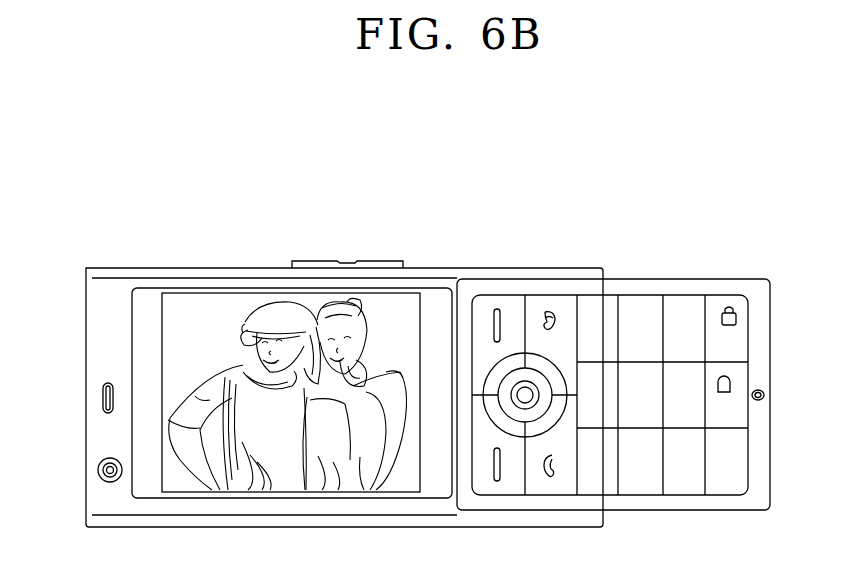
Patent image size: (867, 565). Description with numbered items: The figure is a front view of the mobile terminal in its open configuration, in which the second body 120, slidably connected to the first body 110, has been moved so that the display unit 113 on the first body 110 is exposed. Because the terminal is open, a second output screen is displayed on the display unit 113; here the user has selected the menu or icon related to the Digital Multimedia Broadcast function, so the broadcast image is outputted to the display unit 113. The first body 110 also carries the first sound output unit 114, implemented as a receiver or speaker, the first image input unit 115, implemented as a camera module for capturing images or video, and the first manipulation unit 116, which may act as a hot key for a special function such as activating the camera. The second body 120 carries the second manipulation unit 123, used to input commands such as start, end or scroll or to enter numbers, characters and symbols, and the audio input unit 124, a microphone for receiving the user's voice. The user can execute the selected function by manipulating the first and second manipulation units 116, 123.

The first body 110 is at (136, 262).
The display unit 113 is at (218, 295).
The first sound output unit 114 is at (101, 397).
The first image input unit 115 is at (97, 470).
The first manipulation unit 116 is at (311, 261).
The second body 120 is at (639, 276).
The second manipulation unit 123 is at (697, 303).
The audio input unit 124 is at (766, 395).